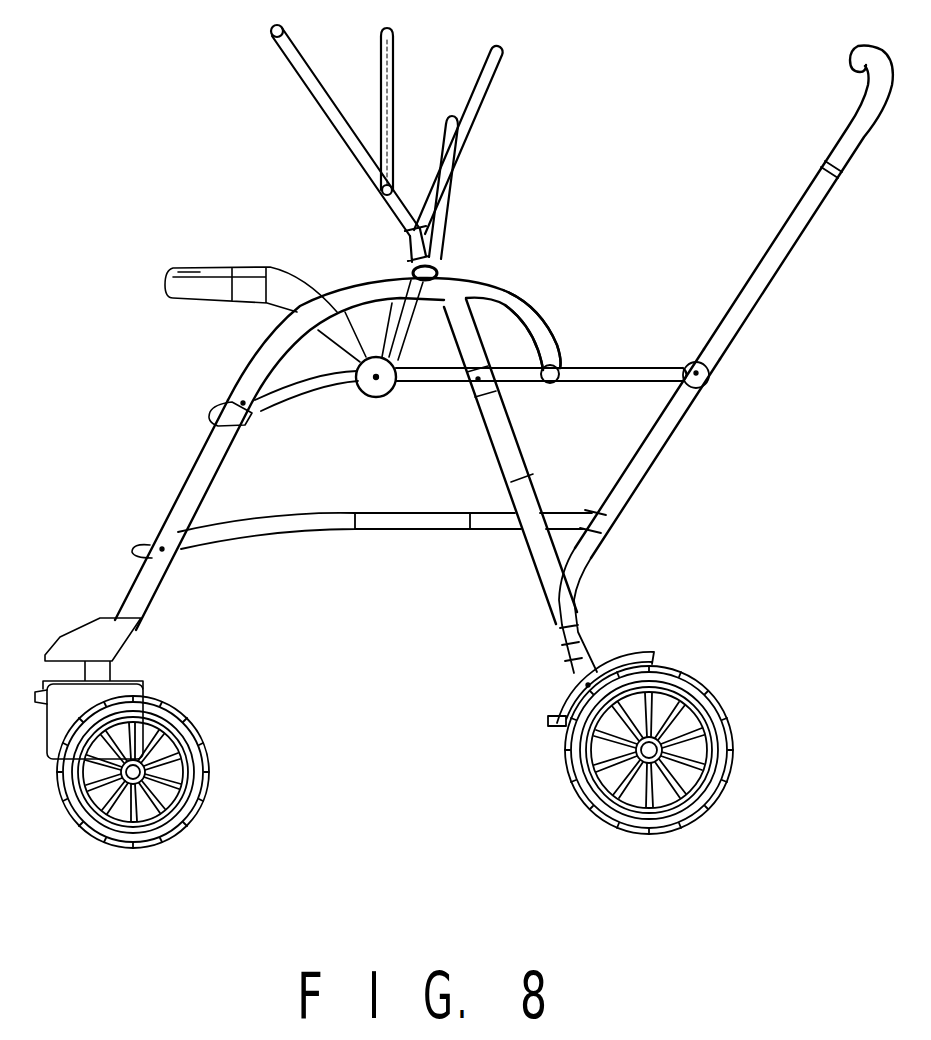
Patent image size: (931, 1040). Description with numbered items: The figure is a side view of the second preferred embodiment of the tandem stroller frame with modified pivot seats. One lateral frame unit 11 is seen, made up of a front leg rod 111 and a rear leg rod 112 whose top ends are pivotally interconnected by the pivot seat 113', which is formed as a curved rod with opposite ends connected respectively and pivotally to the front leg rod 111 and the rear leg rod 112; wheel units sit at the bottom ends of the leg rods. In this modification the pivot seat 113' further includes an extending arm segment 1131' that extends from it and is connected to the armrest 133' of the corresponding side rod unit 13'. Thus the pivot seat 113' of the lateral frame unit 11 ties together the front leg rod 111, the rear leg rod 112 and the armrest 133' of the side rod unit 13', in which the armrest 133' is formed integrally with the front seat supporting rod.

The lateral frame unit 11 is at (187, 406).
The front leg rod 111 is at (183, 510).
The rear leg rod 112 is at (513, 477).
The pivot seat 113' is at (510, 409).
The extending arm segment 1131' is at (562, 307).
The armrest 133' is at (552, 326).
The side rod unit 13' is at (777, 203).